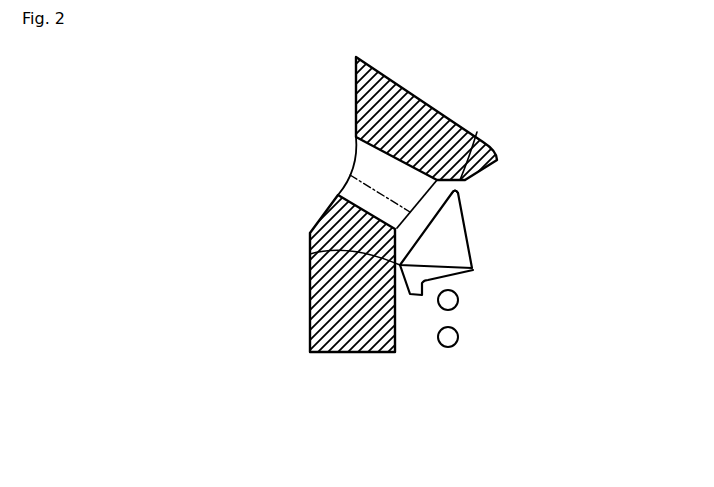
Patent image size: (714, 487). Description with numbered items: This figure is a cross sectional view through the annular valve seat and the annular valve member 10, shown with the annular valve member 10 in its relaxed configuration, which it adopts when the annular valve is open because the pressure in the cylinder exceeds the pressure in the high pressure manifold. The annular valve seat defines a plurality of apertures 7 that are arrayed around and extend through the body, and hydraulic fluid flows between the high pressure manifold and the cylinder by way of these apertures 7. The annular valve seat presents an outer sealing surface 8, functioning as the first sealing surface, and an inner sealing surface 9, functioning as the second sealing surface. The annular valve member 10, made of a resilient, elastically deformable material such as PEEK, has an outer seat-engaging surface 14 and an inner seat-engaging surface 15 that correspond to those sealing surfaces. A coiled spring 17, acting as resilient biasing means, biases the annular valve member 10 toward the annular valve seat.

The apertures 7 is at (355, 188).
The outer sealing surface 8 is at (477, 132).
The inner sealing surface 9 is at (310, 254).
The annular valve member 10 is at (452, 227).
The outer seat-engaging surface 14 is at (458, 193).
The inner seat-engaging surface 15 is at (458, 271).
The coiled spring 17 is at (453, 302).